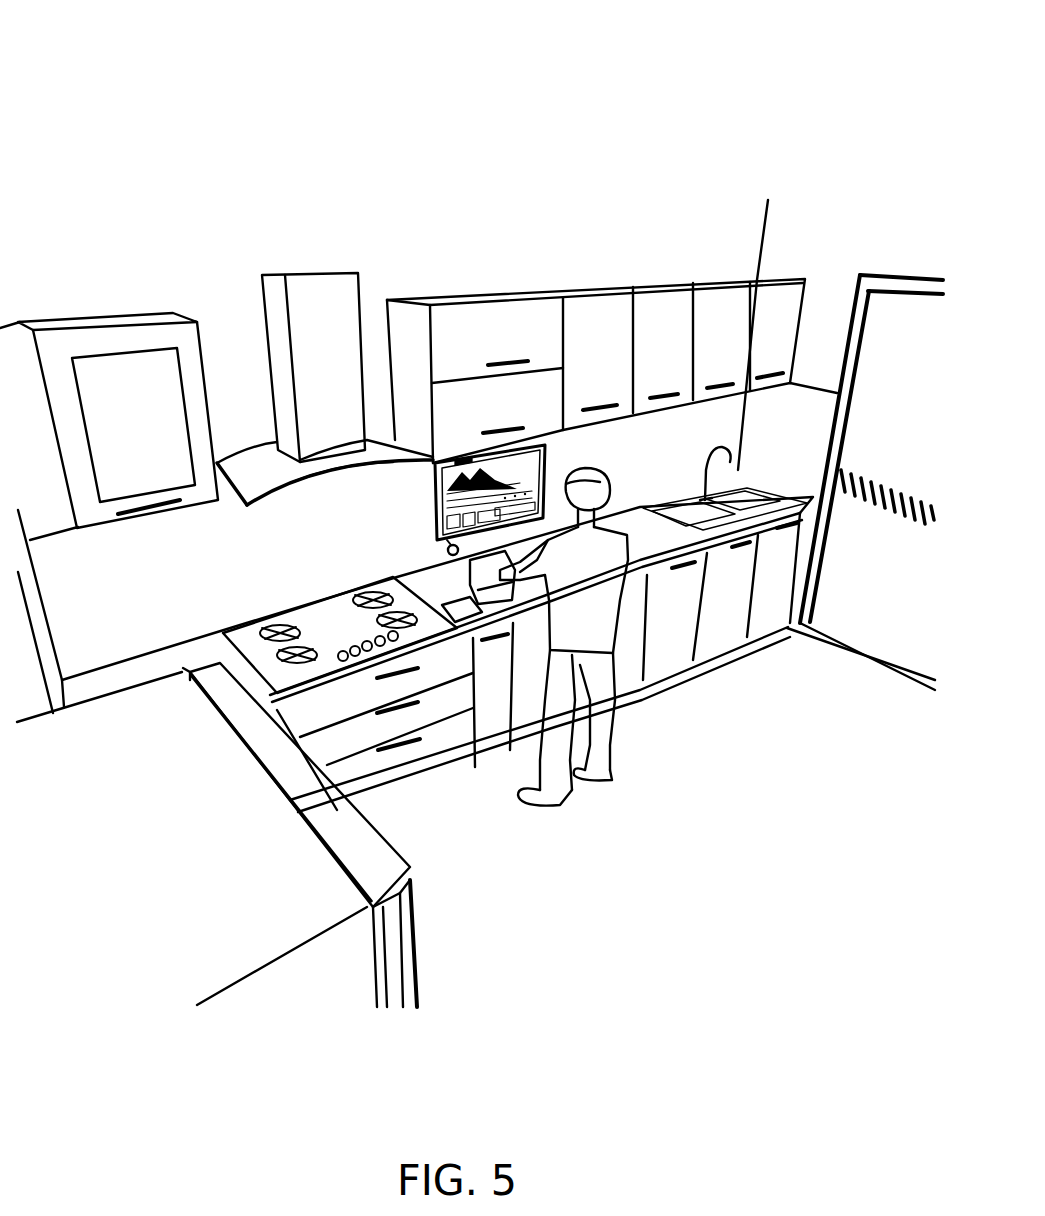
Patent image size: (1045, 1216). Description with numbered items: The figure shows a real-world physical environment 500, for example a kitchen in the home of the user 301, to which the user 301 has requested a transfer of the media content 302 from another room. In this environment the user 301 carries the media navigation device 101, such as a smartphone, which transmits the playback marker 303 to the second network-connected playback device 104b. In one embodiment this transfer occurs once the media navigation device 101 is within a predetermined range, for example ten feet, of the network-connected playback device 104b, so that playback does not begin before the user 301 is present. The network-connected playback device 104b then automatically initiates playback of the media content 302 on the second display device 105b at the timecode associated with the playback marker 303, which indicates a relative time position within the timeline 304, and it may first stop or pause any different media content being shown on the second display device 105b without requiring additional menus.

The real-world physical environment 500 is at (755, 109).
The media navigation device 101 is at (383, 578).
The second network-connected playback device 104b is at (447, 549).
The second display device 105b is at (550, 460).
The user 301 is at (610, 733).
The media content 302 is at (462, 461).
The playback marker 303 is at (486, 507).
The timeline 304 is at (512, 511).